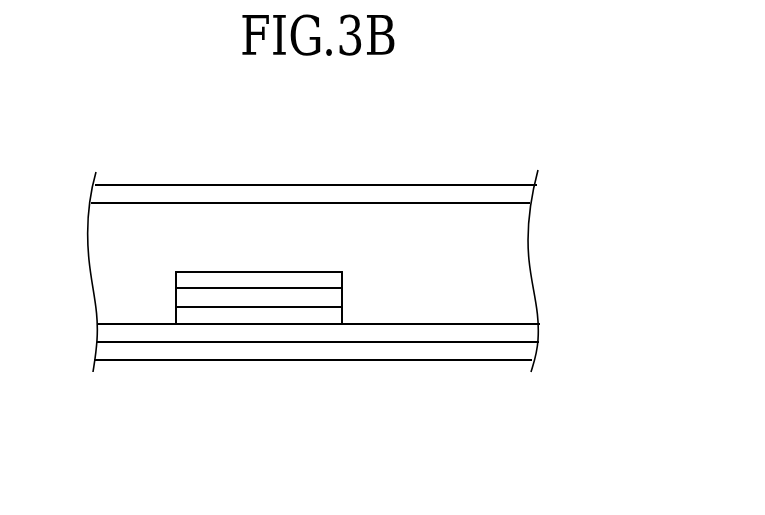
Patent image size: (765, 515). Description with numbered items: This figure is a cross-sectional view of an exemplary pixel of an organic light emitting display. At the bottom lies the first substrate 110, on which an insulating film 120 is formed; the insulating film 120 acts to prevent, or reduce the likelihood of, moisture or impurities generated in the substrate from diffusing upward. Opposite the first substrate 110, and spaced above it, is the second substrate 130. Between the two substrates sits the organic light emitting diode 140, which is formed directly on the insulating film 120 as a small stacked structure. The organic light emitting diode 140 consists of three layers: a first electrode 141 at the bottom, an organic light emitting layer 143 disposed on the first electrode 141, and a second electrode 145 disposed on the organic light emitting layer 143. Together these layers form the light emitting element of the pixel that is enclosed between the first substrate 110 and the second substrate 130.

The first substrate 110 is at (520, 353).
The insulating film 120 is at (520, 333).
The second substrate 130 is at (520, 195).
The organic light emitting diode 140 is at (259, 368).
The first electrode 141 is at (202, 315).
The organic light emitting layer 143 is at (259, 297).
The second electrode 145 is at (304, 280).